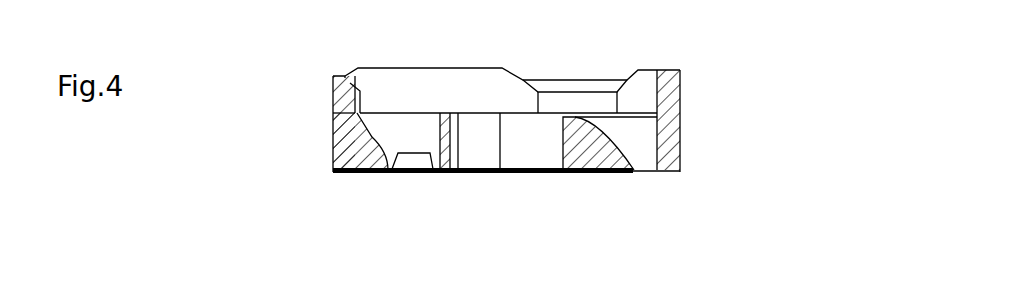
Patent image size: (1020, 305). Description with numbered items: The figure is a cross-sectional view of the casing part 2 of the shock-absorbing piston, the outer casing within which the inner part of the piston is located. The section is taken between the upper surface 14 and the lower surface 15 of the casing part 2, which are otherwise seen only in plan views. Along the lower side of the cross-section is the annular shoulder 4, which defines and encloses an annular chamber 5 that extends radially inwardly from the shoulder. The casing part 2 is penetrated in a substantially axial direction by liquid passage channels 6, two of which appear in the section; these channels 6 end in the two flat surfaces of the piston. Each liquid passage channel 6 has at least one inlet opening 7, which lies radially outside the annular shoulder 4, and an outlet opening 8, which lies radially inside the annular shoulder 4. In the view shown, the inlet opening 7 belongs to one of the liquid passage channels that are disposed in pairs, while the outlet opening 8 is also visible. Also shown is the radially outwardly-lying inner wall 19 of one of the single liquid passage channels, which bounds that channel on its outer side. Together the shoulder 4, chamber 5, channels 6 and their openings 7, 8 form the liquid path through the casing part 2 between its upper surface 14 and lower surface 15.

The casing part 2 is at (748, 108).
The annular shoulder 4 is at (380, 171).
The annular chamber 5 is at (413, 172).
The liquid passage channel 6 is at (395, 128).
The inlet opening 7 is at (648, 158).
The outlet opening 8 is at (413, 158).
The upper surface 14 is at (363, 65).
The lower surface 15 is at (367, 177).
The inner wall 19 is at (334, 128).